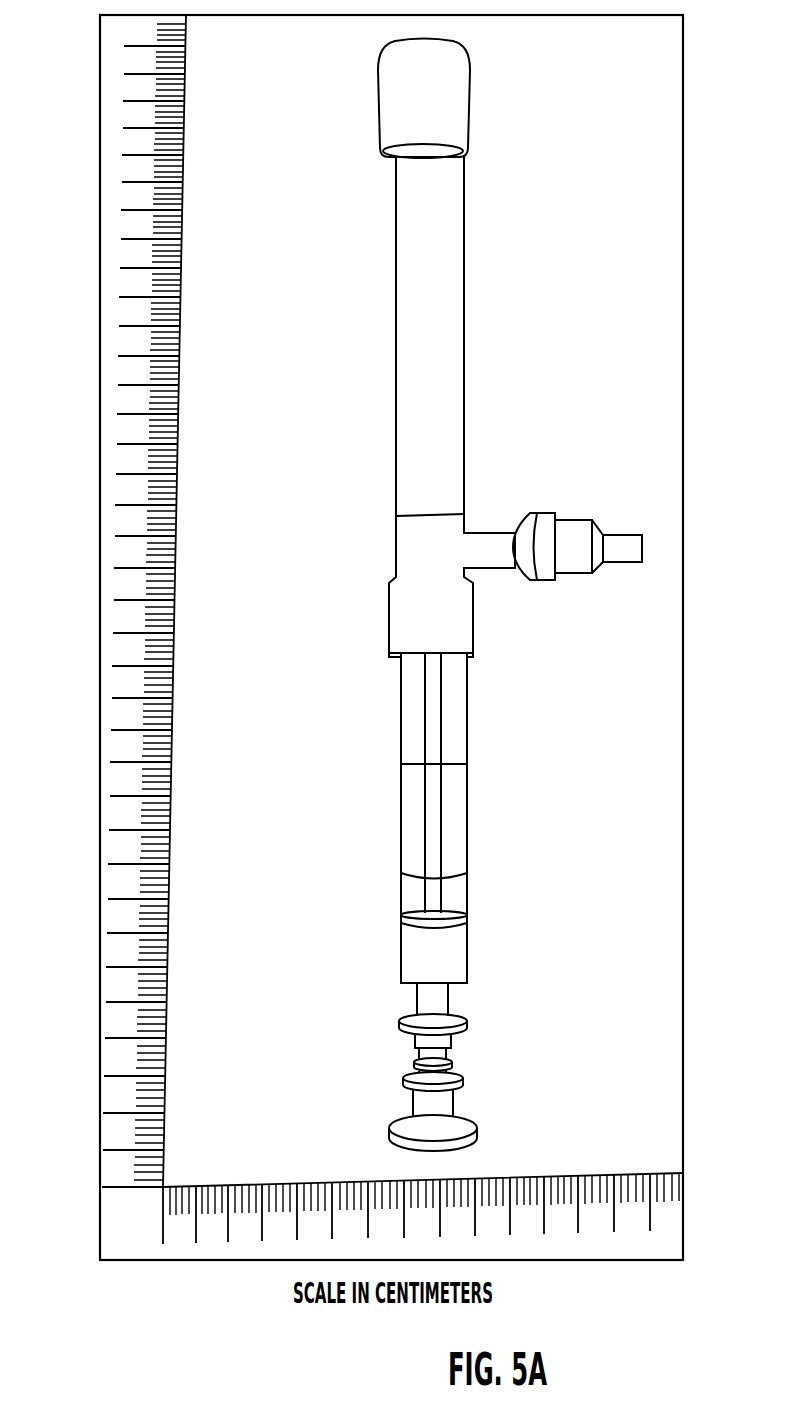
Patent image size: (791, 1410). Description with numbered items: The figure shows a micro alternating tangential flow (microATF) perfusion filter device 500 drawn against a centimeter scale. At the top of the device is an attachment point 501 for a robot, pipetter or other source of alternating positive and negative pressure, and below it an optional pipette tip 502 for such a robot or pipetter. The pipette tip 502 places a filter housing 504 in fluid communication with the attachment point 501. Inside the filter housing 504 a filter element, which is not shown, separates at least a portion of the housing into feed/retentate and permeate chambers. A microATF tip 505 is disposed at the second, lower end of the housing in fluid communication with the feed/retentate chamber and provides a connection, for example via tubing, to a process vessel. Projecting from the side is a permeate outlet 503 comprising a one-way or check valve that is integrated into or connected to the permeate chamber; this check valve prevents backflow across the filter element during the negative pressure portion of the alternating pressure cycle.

The micro alternating tangential flow (microATF) perfusion filter device 500 is at (50, 162).
The attachment point 501 is at (484, 51).
The pipette tip 502 is at (484, 252).
The permeate outlet 503 is at (655, 548).
The filter housing 504 is at (506, 798).
The microATF tip 505 is at (513, 1104).